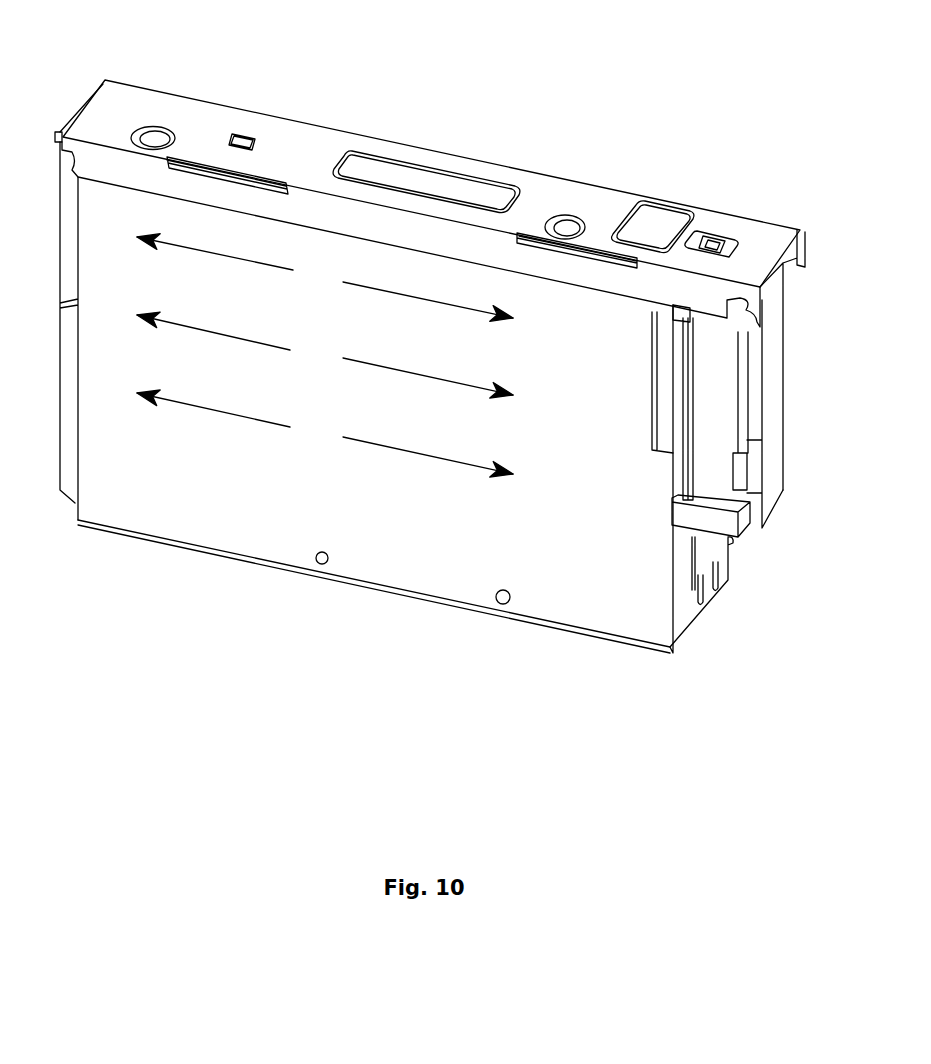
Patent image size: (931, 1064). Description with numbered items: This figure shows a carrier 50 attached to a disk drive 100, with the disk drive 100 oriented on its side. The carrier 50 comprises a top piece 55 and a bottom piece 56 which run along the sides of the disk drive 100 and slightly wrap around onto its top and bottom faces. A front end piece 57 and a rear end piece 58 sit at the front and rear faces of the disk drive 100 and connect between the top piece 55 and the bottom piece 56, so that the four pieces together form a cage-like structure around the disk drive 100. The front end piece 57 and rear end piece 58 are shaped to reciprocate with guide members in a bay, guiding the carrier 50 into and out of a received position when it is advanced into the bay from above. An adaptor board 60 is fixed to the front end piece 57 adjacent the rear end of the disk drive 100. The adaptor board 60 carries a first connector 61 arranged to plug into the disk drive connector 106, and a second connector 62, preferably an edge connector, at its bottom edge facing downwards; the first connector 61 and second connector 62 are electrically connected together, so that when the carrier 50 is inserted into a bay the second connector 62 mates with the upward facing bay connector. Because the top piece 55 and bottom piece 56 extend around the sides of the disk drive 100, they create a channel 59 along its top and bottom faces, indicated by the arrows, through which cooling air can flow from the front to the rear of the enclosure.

The carrier 50 is at (720, 58).
The top piece 55 is at (302, 148).
The bottom piece 56 is at (230, 560).
The front end piece 57 is at (772, 477).
The rear end piece 58 is at (68, 466).
The channel 59 is at (325, 330).
The adaptor board 60 is at (700, 567).
The first connector 61 is at (655, 406).
The disk drive connector 106 is at (538, 509).
The second connector 62 is at (712, 602).
The disk drive 100 is at (447, 477).